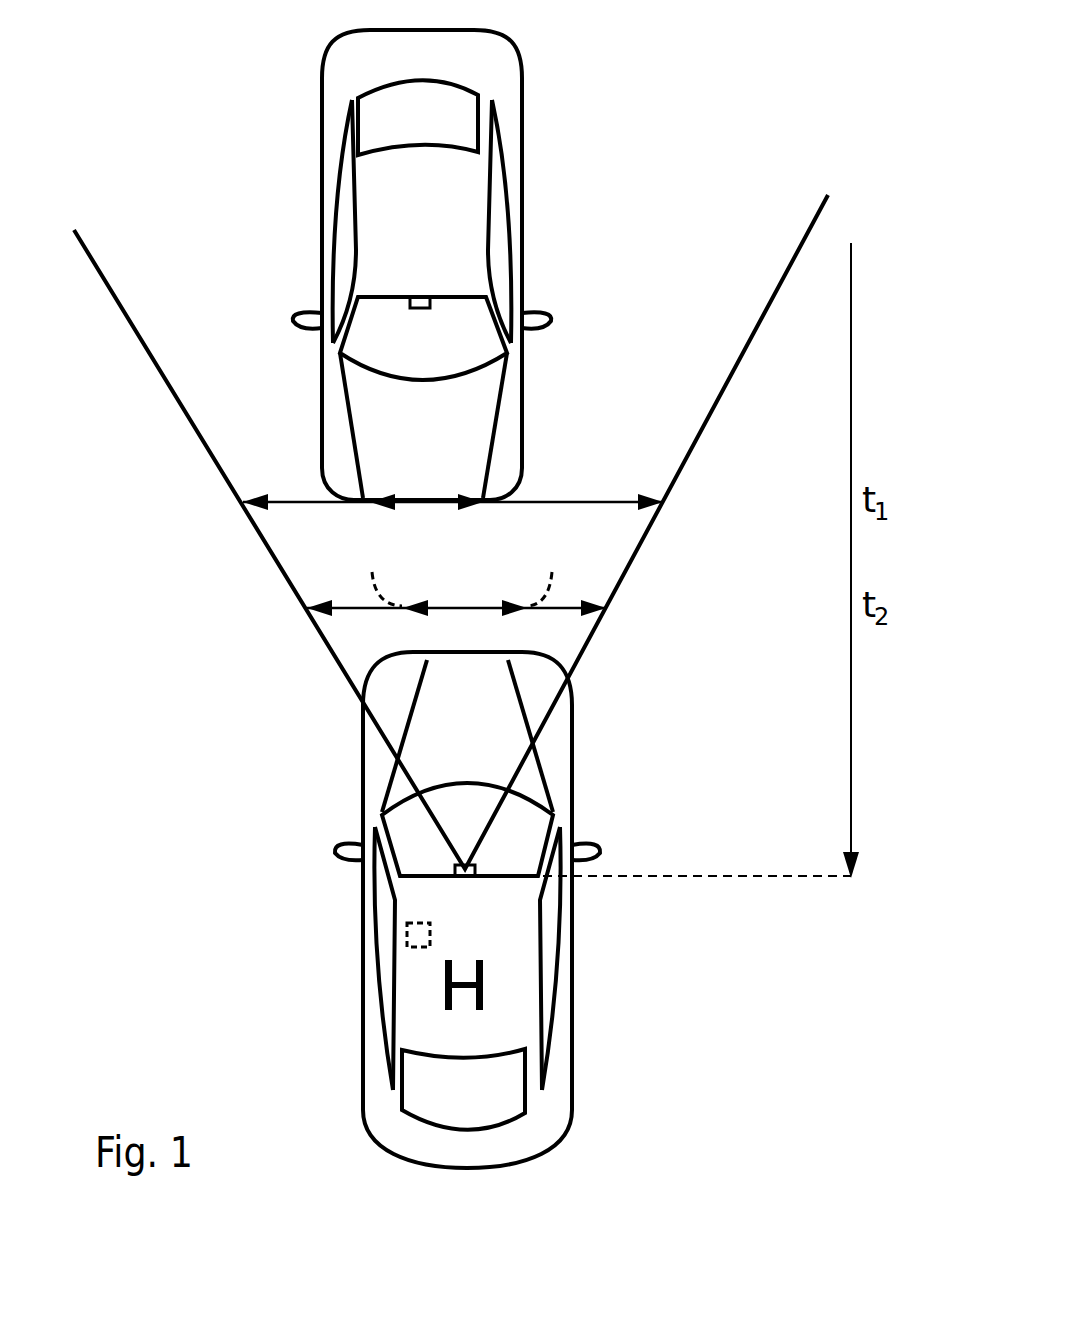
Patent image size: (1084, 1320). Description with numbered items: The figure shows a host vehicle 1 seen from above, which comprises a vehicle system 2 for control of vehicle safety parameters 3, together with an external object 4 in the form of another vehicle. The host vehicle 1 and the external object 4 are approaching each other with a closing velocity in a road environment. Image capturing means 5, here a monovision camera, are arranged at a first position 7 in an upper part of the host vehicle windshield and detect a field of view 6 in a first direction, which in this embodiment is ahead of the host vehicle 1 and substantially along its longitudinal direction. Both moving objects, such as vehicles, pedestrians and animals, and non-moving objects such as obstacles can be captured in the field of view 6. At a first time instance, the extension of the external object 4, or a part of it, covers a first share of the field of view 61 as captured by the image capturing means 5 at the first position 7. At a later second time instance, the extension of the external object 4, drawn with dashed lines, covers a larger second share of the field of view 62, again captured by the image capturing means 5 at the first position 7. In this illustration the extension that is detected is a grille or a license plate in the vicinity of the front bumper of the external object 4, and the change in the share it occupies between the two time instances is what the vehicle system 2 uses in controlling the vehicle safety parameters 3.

The host vehicle 1 is at (611, 1144).
The vehicle system 2 is at (714, 1068).
The vehicle safety parameters 3 is at (413, 958).
The external object 4 is at (584, 92).
The image capturing means 5 is at (470, 884).
The field of view 6 is at (170, 396).
The field of view at first time instance 61 is at (302, 505).
The field of view at second time instance 62 is at (348, 610).
The first position 7 is at (450, 884).